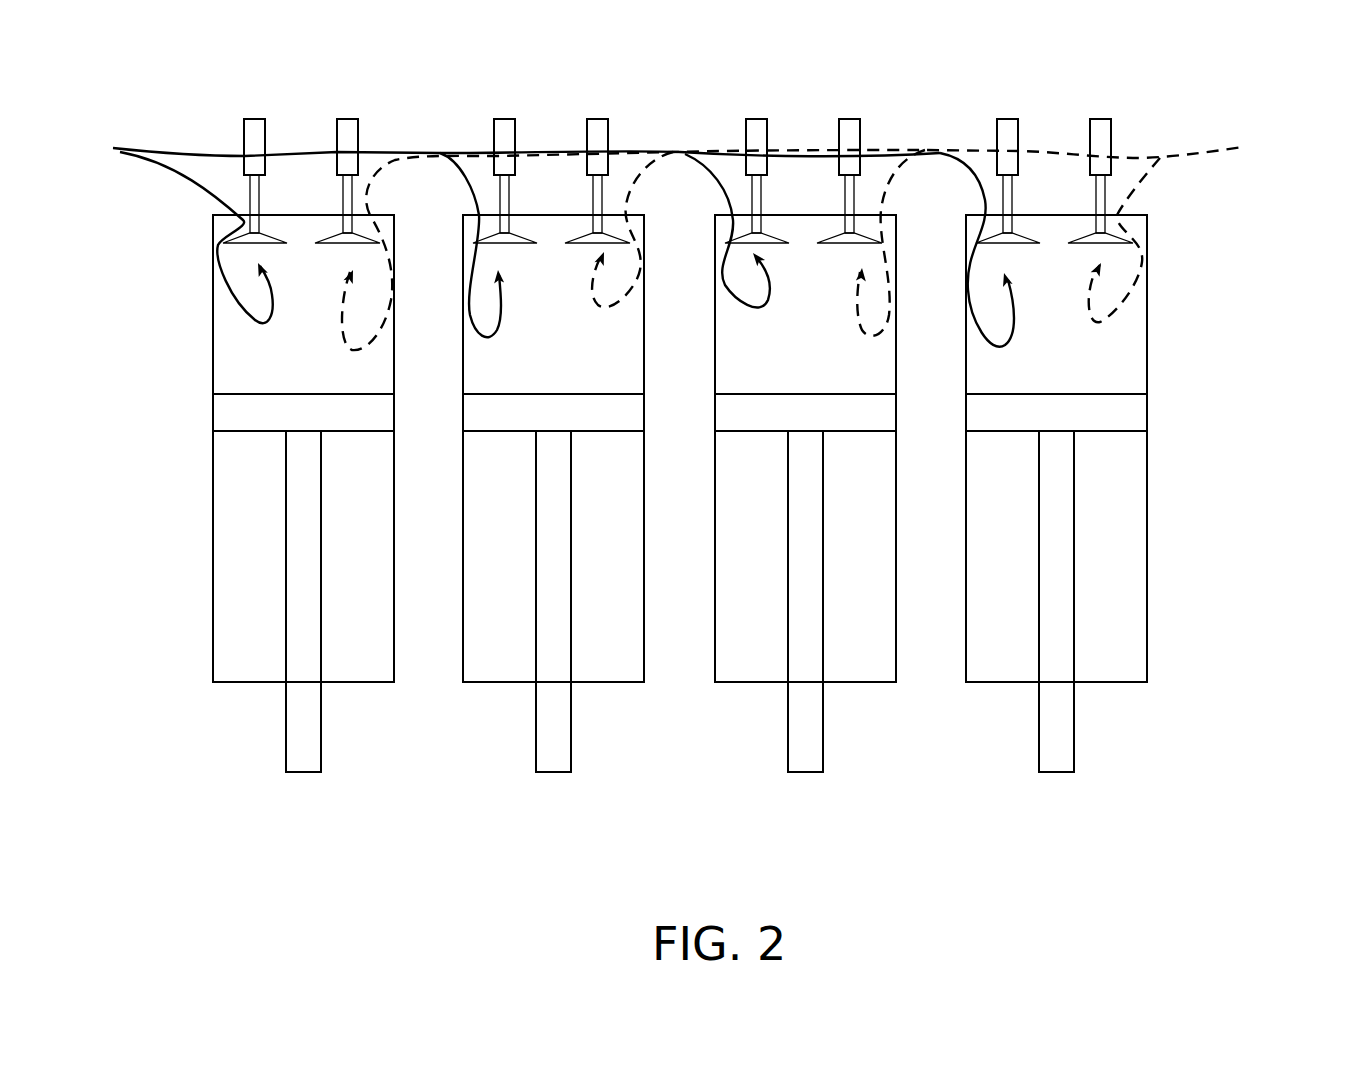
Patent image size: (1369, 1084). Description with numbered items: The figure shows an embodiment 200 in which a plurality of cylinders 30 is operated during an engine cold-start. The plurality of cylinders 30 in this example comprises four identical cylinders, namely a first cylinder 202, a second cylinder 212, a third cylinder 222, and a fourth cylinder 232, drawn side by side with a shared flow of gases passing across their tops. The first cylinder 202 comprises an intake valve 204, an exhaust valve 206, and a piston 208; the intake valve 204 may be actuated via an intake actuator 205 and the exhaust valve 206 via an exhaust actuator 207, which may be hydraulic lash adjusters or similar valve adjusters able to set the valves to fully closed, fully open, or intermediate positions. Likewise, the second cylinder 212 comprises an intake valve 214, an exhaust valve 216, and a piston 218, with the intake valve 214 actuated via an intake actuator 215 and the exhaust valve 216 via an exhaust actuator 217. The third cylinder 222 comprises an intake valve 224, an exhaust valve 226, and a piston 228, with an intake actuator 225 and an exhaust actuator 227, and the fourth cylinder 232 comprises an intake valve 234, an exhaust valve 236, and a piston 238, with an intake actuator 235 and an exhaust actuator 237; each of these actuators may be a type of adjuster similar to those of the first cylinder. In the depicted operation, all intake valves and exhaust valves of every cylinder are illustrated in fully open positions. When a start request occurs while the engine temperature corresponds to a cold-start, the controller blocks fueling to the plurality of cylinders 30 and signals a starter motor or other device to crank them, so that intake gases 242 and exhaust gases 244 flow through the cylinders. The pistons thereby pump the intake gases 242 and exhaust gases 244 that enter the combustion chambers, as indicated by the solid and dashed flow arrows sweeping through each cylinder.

The embodiment 200 is at (1274, 64).
The plurality of cylinders 30 is at (112, 785).
The first cylinder 202 is at (213, 683).
The intake valve 204 is at (260, 214).
The intake actuator 205 is at (256, 119).
The exhaust valve 206 is at (343, 214).
The exhaust actuator 207 is at (340, 119).
The piston 208 is at (232, 394).
The second cylinder 212 is at (520, 479).
The intake valve 214 is at (510, 208).
The intake actuator 215 is at (521, 129).
The exhaust valve 216 is at (591, 208).
The exhaust actuator 217 is at (581, 129).
The piston 218 is at (531, 559).
The third cylinder 222 is at (772, 479).
The intake valve 224 is at (762, 208).
The intake actuator 225 is at (773, 129).
The exhaust valve 226 is at (843, 208).
The exhaust actuator 227 is at (833, 129).
The piston 228 is at (783, 559).
The fourth cylinder 232 is at (1023, 479).
The intake valve 234 is at (1013, 208).
The intake actuator 235 is at (1024, 129).
The exhaust valve 236 is at (1094, 208).
The exhaust actuator 237 is at (1084, 129).
The piston 238 is at (1034, 559).
The intake gases 242 is at (138, 150).
The exhaust gases 244 is at (1157, 157).